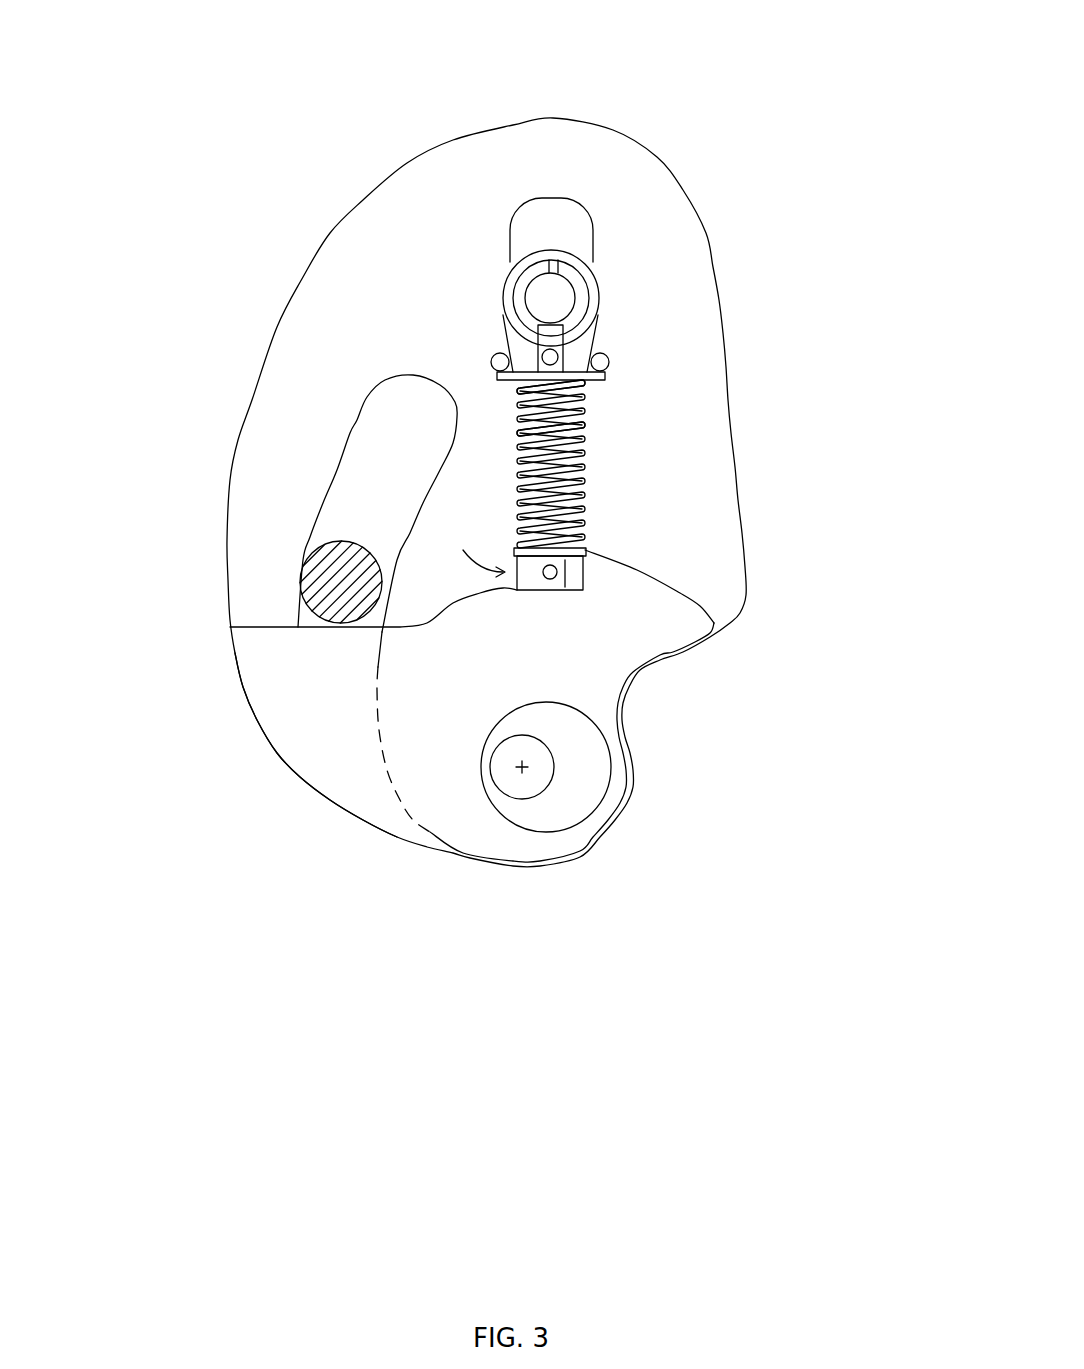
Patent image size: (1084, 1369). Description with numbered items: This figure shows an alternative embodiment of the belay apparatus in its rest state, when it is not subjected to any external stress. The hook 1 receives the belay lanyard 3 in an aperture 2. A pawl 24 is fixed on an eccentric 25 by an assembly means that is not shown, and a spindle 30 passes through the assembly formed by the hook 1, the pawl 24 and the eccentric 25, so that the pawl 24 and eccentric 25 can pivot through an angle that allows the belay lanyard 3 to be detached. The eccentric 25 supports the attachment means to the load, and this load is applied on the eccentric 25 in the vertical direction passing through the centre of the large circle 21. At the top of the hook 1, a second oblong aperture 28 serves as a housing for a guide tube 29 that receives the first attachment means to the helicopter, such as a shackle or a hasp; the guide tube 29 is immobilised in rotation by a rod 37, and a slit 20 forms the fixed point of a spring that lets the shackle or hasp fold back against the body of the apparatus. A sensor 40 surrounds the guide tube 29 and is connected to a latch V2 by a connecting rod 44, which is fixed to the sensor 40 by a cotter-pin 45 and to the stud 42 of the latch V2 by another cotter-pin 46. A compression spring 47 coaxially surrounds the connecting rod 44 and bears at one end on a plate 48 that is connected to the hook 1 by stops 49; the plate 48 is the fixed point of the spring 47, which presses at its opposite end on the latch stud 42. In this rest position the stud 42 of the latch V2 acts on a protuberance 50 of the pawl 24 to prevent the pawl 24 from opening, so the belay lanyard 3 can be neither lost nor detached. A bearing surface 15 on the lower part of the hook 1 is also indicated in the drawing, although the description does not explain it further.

The hook 1 is at (470, 192).
The aperture 2 is at (387, 450).
The belay lanyard 3 is at (327, 575).
The bearing surface 15 is at (253, 638).
The slit 20 is at (551, 268).
The large circle 21 is at (553, 704).
The pawl 24 is at (320, 742).
The eccentric 25 is at (565, 805).
The second oblong aperture 28 is at (578, 223).
The guide tube 29 is at (580, 297).
The spindle 30 is at (518, 770).
The rod 37 is at (582, 316).
The sensor 40 is at (578, 347).
The stud 42 is at (575, 563).
The connecting rod 44 is at (583, 429).
The cotter-pin 45 is at (508, 322).
The cotter-pin 46 is at (555, 578).
The compression spring 47 is at (583, 486).
The plate 48 is at (605, 372).
The stops 49 is at (499, 362).
The protuberance 50 is at (630, 590).
The latch V2 is at (467, 547).